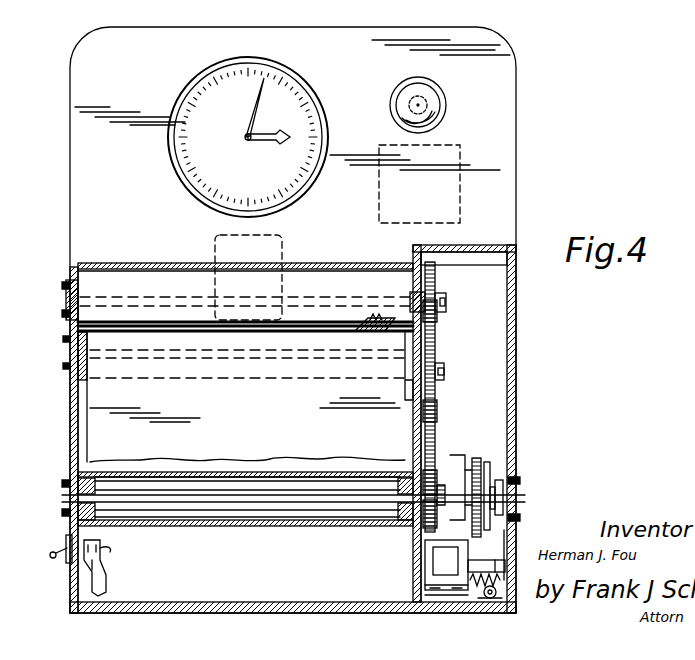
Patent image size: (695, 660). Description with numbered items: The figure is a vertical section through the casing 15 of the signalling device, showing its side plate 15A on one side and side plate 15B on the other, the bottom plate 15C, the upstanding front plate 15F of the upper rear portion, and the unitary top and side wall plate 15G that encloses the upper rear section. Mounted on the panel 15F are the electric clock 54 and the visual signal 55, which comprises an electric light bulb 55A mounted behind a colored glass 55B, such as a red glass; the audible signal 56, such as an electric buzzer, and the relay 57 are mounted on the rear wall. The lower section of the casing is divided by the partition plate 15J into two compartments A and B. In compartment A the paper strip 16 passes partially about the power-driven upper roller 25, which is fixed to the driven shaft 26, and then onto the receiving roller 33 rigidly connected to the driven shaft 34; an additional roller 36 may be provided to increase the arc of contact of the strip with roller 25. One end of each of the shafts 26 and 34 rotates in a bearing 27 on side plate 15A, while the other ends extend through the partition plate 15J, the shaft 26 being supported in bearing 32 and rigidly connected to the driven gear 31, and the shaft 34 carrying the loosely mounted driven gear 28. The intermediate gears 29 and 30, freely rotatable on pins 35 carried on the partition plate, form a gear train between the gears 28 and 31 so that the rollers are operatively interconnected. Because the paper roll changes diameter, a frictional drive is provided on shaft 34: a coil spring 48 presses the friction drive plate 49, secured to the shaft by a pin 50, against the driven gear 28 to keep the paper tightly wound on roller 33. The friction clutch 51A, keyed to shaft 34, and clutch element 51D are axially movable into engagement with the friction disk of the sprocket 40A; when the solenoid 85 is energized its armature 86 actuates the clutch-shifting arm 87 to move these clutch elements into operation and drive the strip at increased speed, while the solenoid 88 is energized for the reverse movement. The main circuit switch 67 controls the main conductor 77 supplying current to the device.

The casing 15 is at (517, 290).
The side plate 15A is at (73, 395).
The side plate 15B is at (517, 385).
The bottom plate 15C is at (282, 605).
The front plate 15F is at (488, 130).
The unitary top and side wall plate 15G is at (493, 245).
The partition plate 15J is at (421, 412).
The paper strip 16 is at (333, 265).
The power-driven upper roller 25 is at (180, 272).
The driven shaft 26 is at (162, 297).
The bearing 27 is at (62, 286).
The driven gear 28 is at (413, 540).
The intermediate gear 29 is at (437, 428).
The intermediate gear 30 is at (437, 352).
The driven gear 31 is at (438, 318).
The bearing 32 is at (433, 297).
The receiving roller 33 is at (236, 527).
The driven shaft 34 is at (300, 502).
The pin 35 is at (444, 375).
The additional roller 36 is at (240, 380).
The sprocket 40A is at (482, 452).
The coil spring 48 is at (436, 515).
The friction drive plate 49 is at (432, 475).
The pin 50 is at (442, 485).
The friction clutch 51A is at (482, 468).
The clutch element 51D is at (500, 480).
The electric clock 54 is at (225, 113).
The visual signal 55 is at (404, 88).
The electric light bulb 55A is at (425, 111).
The colored glass 55B is at (428, 97).
The audible signal 56 is at (213, 240).
The relay 57 is at (462, 198).
The main circuit switch 67 is at (55, 558).
The main conductor 77 is at (116, 544).
The solenoid 85 is at (433, 563).
The armature 86 is at (482, 562).
The clutch-shifting arm 87 is at (500, 526).
The solenoid 88 is at (491, 598).
The compartment A is at (80, 432).
The compartment B is at (490, 352).